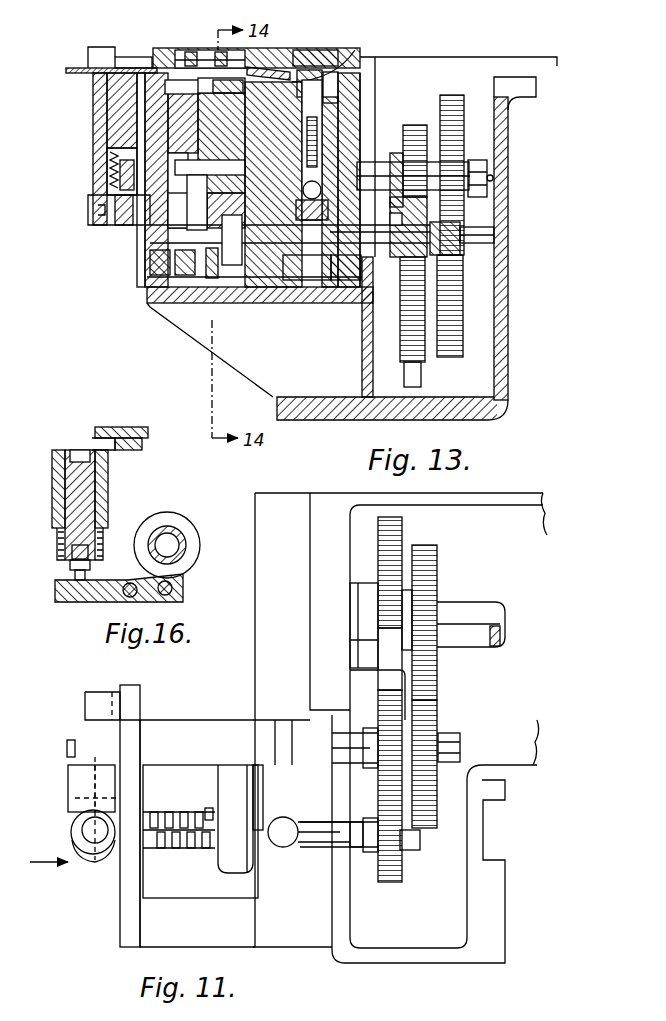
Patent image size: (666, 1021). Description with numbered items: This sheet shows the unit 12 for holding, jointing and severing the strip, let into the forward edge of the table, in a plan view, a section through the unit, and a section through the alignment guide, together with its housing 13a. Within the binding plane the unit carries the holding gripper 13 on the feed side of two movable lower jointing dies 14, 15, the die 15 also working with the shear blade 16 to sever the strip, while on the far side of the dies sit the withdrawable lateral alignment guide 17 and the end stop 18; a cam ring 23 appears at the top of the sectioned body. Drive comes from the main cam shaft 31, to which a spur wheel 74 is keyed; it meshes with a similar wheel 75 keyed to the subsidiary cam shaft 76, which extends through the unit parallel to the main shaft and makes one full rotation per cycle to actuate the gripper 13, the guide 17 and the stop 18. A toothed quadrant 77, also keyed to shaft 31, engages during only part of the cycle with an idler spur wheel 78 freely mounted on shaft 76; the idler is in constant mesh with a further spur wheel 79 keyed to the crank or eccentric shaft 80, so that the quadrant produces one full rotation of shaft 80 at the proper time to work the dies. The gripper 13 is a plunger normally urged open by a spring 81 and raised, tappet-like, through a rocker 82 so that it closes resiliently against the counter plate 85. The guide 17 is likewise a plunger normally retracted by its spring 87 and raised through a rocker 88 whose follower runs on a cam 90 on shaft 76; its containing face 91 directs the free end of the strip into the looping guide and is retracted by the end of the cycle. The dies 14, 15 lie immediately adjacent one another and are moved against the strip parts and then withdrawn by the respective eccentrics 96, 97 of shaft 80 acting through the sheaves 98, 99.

In FIG. 11, the unit 12 is at (49, 877).
In FIG. 13, the holding gripper 13 is at (333, 98).
In FIG. 11, the holding gripper 13 is at (288, 818).
In FIG. 13, the housing 13a is at (406, 225).
In FIG. 11, the housing 13a is at (400, 728).
In FIG. 13, the lower jointing die 14 is at (105, 138).
In FIG. 11, the lower jointing die 14 is at (160, 815).
In FIG. 13, the lower jointing die 15 is at (200, 176).
In FIG. 11, the lower jointing die 15 is at (207, 817).
In FIG. 13, the shear blade 16 is at (273, 68).
In FIG. 11, the shear blade 16 is at (222, 866).
In FIG. 13, the lateral alignment guide 17 is at (95, 93).
In FIG. 16, the lateral alignment guide 17 is at (94, 489).
In FIG. 11, the lateral alignment guide 17 is at (72, 835).
In FIG. 13, the end stop 18 is at (128, 57).
In FIG. 16, the end stop 18 is at (112, 447).
In FIG. 11, the end stop 18 is at (80, 818).
In FIG. 13, the cam ring 23 is at (200, 54).
In FIG. 13, the main cam shaft 31 is at (474, 260).
In FIG. 11, the main cam shaft 31 is at (472, 617).
In FIG. 13, the spur wheel 74 is at (458, 345).
In FIG. 11, the spur wheel 74 is at (440, 568).
In FIG. 13, the spur wheel 75 is at (452, 95).
In FIG. 11, the spur wheel 75 is at (440, 705).
In FIG. 13, the subsidiary cam shaft 76 is at (388, 158).
In FIG. 16, the subsidiary cam shaft 76 is at (178, 542).
In FIG. 11, the subsidiary cam shaft 76 is at (352, 735).
In FIG. 13, the toothed quadrant 77 is at (412, 363).
In FIG. 11, the toothed quadrant 77 is at (402, 530).
In FIG. 13, the idler spur wheel 78 is at (420, 125).
In FIG. 11, the idler spur wheel 78 is at (378, 712).
In FIG. 13, the spur wheel 79 is at (362, 323).
In FIG. 11, the spur wheel 79 is at (403, 862).
In FIG. 13, the crank or eccentric shaft 80 is at (322, 267).
In FIG. 11, the crank or eccentric shaft 80 is at (356, 848).
In FIG. 13, the spring 81 is at (368, 135).
In FIG. 11, the spring 81 is at (364, 625).
In FIG. 13, the rocker 82 is at (312, 256).
In FIG. 13, the counter plate 85 is at (305, 52).
In FIG. 13, the spring 87 is at (108, 163).
In FIG. 16, the spring 87 is at (60, 541).
In FIG. 13, the rocker 88 is at (115, 205).
In FIG. 16, the rocker 88 is at (110, 585).
In FIG. 16, the cam 90 is at (165, 527).
In FIG. 16, the containing face 91 is at (76, 452).
In FIG. 11, the containing face 91 is at (90, 858).
In FIG. 13, the eccentric 96 is at (165, 238).
In FIG. 13, the eccentric 97 is at (215, 280).
In FIG. 13, the sheave 98 is at (185, 255).
In FIG. 13, the sheave 99 is at (249, 240).